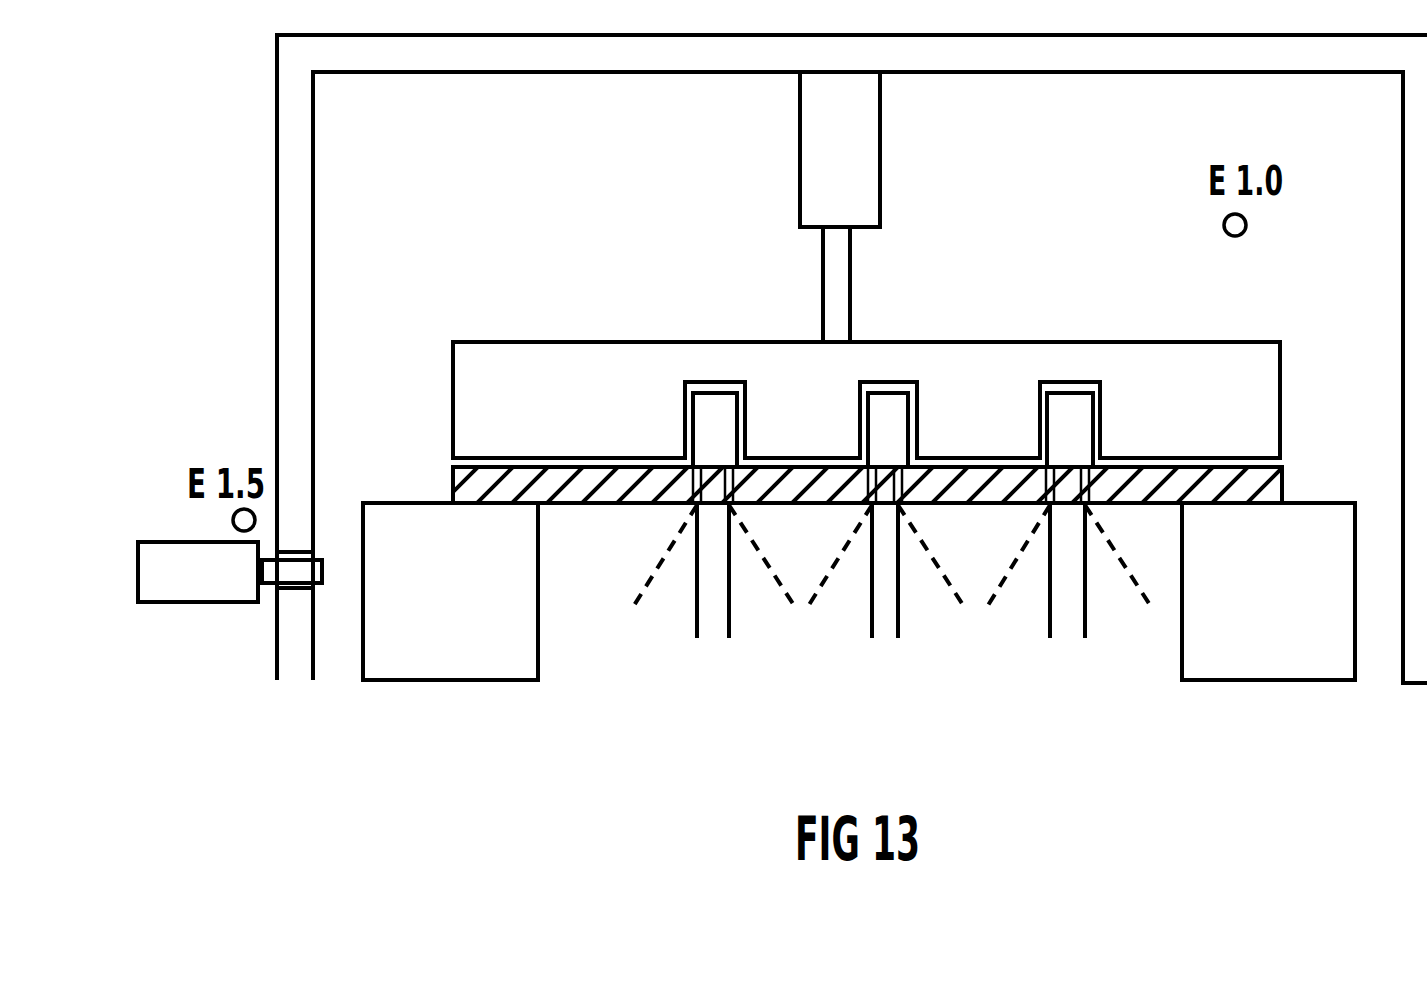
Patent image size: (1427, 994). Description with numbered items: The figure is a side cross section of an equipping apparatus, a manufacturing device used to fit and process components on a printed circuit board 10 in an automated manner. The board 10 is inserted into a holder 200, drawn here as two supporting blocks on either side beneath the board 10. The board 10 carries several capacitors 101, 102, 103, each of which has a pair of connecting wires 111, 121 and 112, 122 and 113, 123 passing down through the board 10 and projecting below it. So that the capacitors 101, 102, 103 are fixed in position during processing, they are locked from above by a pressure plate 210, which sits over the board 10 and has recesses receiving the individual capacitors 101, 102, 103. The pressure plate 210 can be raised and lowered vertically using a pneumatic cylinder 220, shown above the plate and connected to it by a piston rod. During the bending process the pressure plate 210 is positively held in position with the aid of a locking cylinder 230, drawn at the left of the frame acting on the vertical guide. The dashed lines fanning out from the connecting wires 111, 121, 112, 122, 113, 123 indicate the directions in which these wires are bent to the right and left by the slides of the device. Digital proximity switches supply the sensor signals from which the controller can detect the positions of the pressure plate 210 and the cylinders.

The printed circuit board 10 is at (585, 490).
The capacitor 101 is at (710, 413).
The capacitor 102 is at (884, 415).
The capacitor 103 is at (1065, 415).
The connecting wire 111 is at (693, 597).
The connecting wire 112 is at (867, 595).
The connecting wire 113 is at (1047, 598).
The connecting wire 121 is at (732, 595).
The connecting wire 122 is at (903, 597).
The connecting wire 123 is at (1090, 598).
The holder 200 is at (432, 647).
The pressure plate 210 is at (562, 365).
The pneumatic cylinder 220 is at (823, 140).
The locking cylinder 230 is at (182, 578).